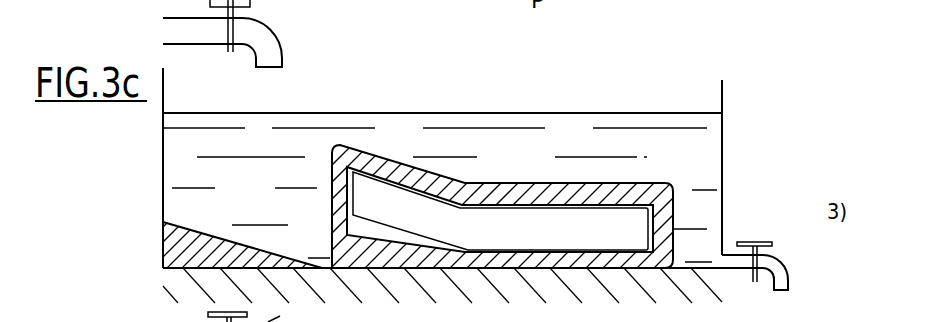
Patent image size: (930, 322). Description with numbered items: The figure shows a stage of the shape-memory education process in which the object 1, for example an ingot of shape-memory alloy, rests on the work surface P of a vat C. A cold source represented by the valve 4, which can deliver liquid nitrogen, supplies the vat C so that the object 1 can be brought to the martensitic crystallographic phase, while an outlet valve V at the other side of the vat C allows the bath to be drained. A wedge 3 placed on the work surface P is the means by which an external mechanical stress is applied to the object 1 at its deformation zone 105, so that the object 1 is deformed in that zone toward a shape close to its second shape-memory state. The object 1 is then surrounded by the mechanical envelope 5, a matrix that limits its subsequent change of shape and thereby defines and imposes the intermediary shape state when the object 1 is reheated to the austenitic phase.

The object 1 is at (503, 199).
The wedge 3 is at (188, 240).
The valve 4 is at (268, 18).
The mechanical envelope 5 is at (545, 188).
The deformation zone 105 is at (462, 203).
The vat C is at (722, 94).
The work surface P is at (472, 285).
The outlet valve V is at (785, 267).